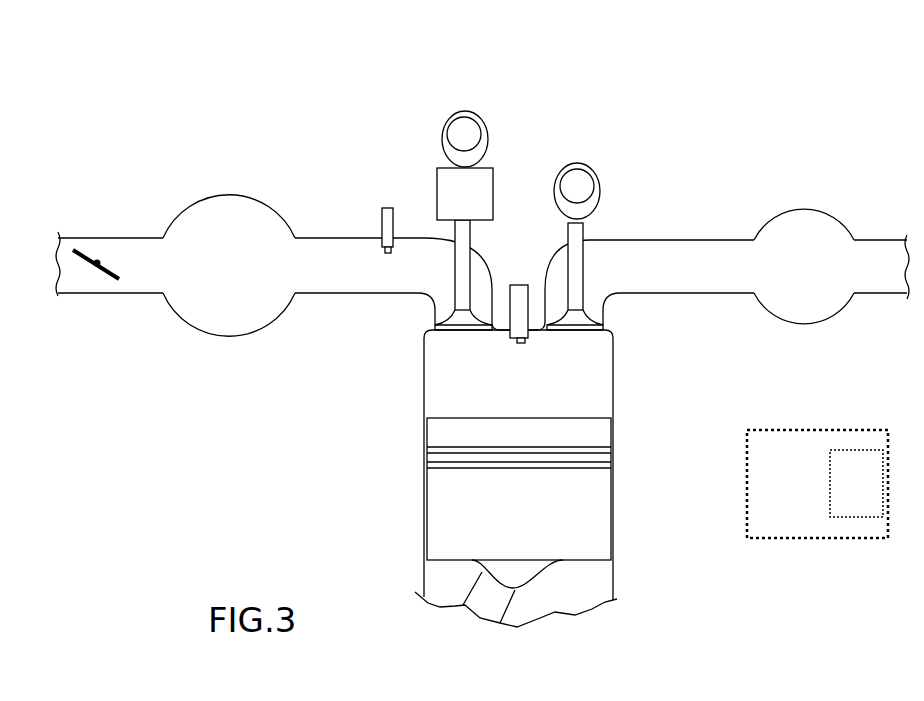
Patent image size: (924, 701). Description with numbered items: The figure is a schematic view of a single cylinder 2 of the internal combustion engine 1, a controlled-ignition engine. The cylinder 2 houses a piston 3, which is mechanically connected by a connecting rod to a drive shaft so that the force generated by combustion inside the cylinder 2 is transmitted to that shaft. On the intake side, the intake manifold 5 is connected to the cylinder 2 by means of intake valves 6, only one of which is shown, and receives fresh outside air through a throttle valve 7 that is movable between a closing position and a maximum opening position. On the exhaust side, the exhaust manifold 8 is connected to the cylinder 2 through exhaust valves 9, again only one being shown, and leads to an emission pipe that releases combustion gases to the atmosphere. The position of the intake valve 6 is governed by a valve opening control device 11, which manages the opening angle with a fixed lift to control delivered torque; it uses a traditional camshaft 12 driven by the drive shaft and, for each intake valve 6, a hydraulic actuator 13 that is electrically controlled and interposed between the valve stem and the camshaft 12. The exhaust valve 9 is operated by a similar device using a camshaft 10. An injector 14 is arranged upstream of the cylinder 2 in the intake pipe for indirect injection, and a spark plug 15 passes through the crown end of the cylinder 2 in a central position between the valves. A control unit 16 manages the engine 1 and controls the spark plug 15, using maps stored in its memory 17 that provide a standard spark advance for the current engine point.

The internal combustion engine 1 is at (239, 178).
The cylinder 2 is at (445, 394).
The piston 3 is at (578, 502).
The intake manifold 5 is at (238, 227).
The intake valve 6 is at (460, 322).
The throttle valve 7 is at (97, 263).
The exhaust manifold 8 is at (810, 246).
The exhaust valve 9 is at (578, 322).
The camshaft 10 is at (577, 188).
The valve opening control device 11 is at (388, 120).
The camshaft 12 is at (477, 132).
The hydraulic actuator 13 is at (465, 194).
The injector 14 is at (388, 222).
The spark plug 15 is at (519, 292).
The control unit 16 is at (817, 484).
The memory 17 is at (856, 483).